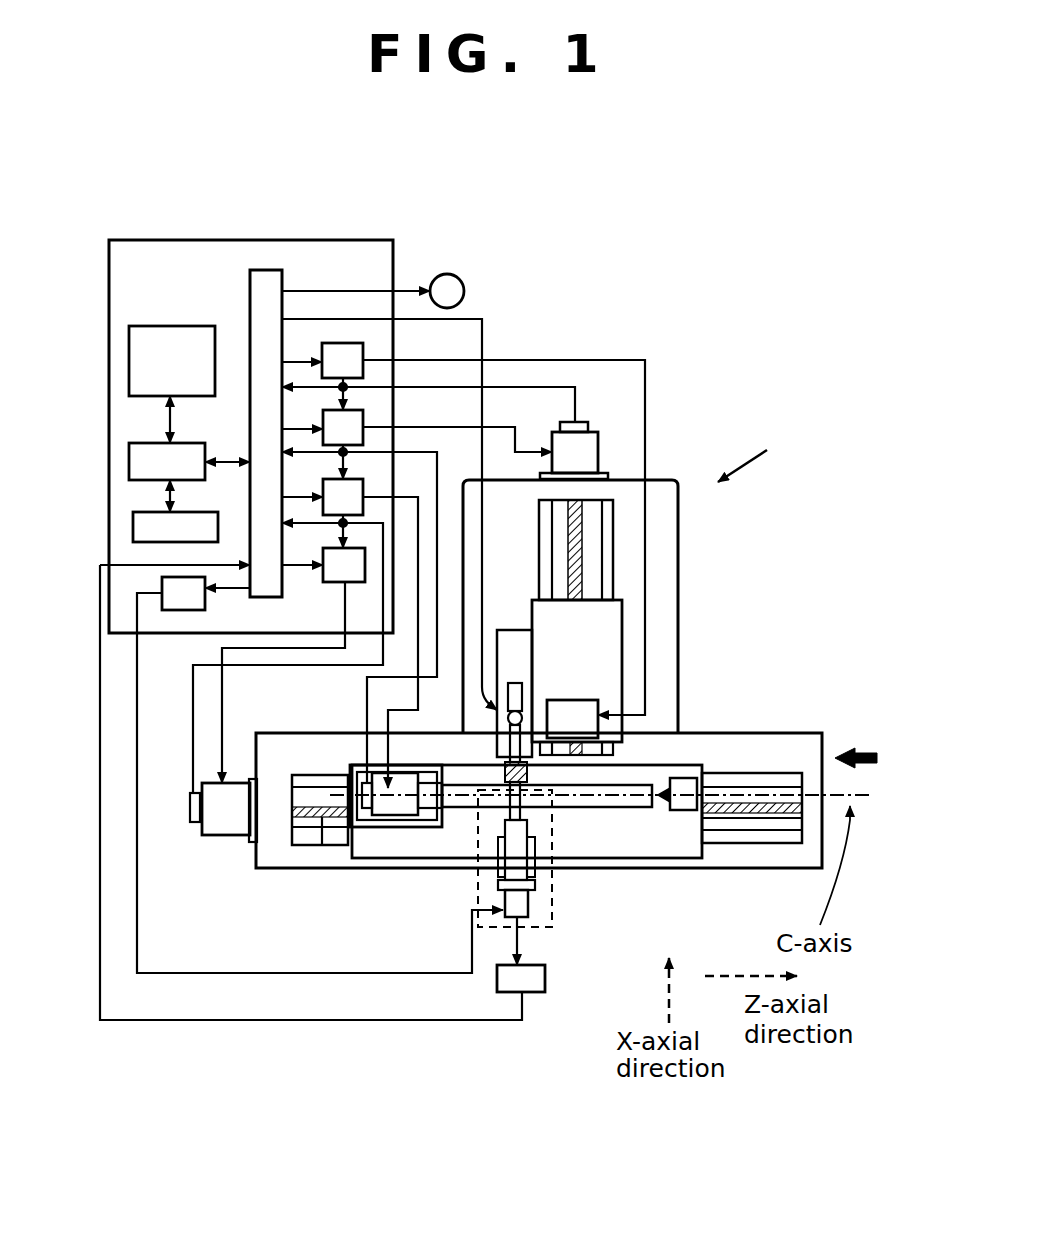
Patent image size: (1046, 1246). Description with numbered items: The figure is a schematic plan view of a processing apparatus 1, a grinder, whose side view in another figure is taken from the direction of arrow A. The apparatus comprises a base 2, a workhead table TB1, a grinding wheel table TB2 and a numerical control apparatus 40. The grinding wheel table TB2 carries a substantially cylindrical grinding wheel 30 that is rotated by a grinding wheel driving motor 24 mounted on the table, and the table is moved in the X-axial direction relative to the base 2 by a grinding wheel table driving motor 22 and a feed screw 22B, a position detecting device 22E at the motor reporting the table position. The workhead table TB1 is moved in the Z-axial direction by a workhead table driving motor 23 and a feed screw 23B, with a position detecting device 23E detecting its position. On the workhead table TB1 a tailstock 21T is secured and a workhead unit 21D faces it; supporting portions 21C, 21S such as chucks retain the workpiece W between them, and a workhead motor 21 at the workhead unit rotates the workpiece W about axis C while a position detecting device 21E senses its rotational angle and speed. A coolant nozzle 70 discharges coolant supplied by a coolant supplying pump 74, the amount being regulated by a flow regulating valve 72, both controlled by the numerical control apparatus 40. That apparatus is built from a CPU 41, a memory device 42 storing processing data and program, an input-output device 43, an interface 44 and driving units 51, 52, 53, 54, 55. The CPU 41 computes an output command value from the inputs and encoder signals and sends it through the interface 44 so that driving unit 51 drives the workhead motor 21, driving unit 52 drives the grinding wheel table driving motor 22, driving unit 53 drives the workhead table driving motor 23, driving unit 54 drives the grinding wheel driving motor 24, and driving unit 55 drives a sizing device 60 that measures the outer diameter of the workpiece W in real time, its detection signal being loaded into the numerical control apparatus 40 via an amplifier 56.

The processing apparatus 1 is at (755, 454).
The base 2 is at (663, 572).
The workhead motor 21 is at (383, 820).
The supporting portion 21C is at (402, 820).
The workhead unit 21D is at (427, 817).
The position detecting device 21E is at (348, 830).
The supporting portion 21S is at (657, 785).
The tailstock 21T is at (683, 778).
The grinding wheel table driving motor 22 is at (600, 450).
The position detecting device 22E is at (590, 425).
The feed screw 22B is at (582, 540).
The workhead table driving motor 23 is at (233, 842).
The feed screw 23B is at (320, 830).
The position detecting device 23E is at (195, 828).
The grinding wheel driving motor 24 is at (588, 702).
The grinding wheel 30 is at (420, 762).
The numerical control apparatus 40 is at (393, 240).
The CPU 41 is at (129, 459).
The memory device 42 is at (129, 357).
The input-output device 43 is at (133, 528).
The interface 44 is at (250, 300).
The driving unit 51 is at (363, 482).
The driving unit 52 is at (363, 420).
The driving unit 53 is at (323, 582).
The driving unit 54 is at (363, 352).
The driving unit 55 is at (168, 610).
The amplifier 56 is at (497, 980).
The sizing device 60 is at (553, 927).
The coolant nozzle 70 is at (500, 757).
The flow regulating valve 72 is at (524, 710).
The coolant supplying pump 74 is at (464, 291).
The arrow A is at (856, 742).
The workhead table TB1 is at (667, 843).
The grinding wheel table TB2 is at (604, 620).
The workpiece W is at (630, 808).